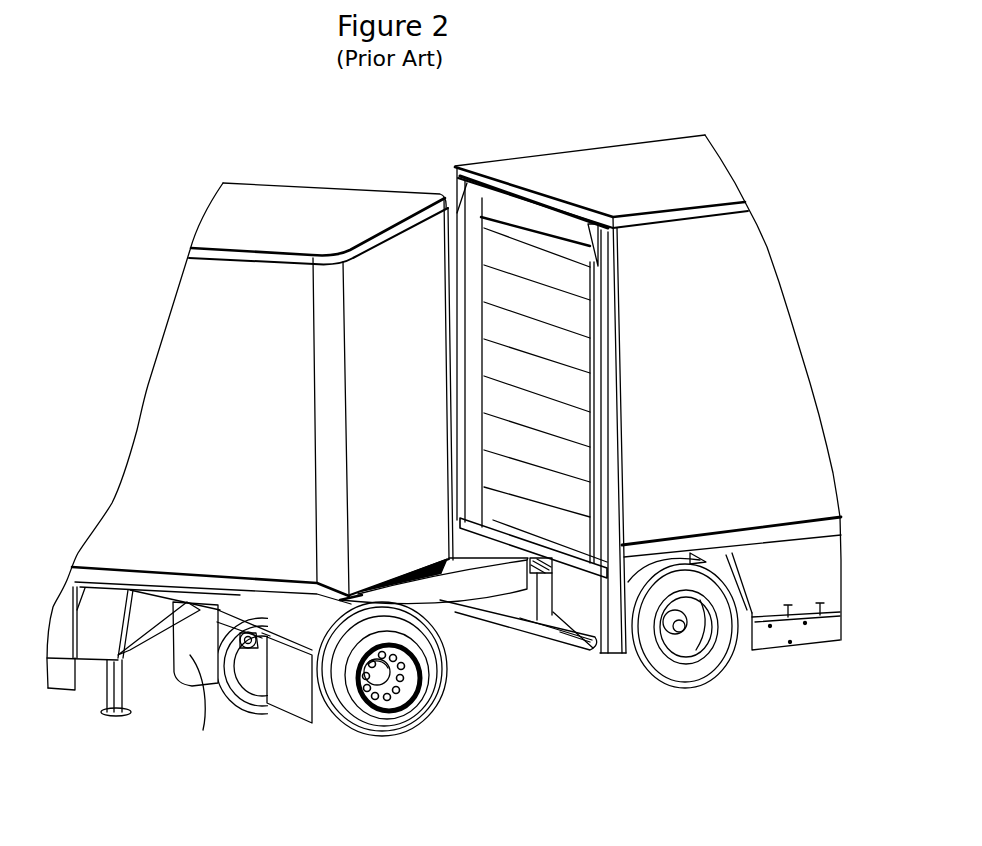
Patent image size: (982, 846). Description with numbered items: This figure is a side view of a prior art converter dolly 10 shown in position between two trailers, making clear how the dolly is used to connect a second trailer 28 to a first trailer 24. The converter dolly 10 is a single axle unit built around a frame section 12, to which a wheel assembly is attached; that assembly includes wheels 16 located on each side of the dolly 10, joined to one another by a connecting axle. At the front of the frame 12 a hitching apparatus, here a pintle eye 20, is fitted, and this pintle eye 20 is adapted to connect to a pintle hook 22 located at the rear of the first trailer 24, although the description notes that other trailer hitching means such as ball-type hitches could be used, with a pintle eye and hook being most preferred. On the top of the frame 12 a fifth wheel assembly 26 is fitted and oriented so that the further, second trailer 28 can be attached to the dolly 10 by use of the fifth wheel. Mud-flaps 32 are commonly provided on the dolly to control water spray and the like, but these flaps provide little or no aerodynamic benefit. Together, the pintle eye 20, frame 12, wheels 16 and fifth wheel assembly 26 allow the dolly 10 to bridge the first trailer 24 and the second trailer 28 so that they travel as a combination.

The converter dolly 10 is at (470, 722).
The frame section 12 is at (457, 596).
The wheels 16 is at (392, 722).
The pintle eye 20 is at (549, 645).
The pintle hook 22 is at (588, 643).
The first trailer 24 is at (714, 419).
The fifth wheel assembly 26 is at (438, 556).
The second trailer 28 is at (236, 451).
The mud-flaps 32 is at (288, 697).